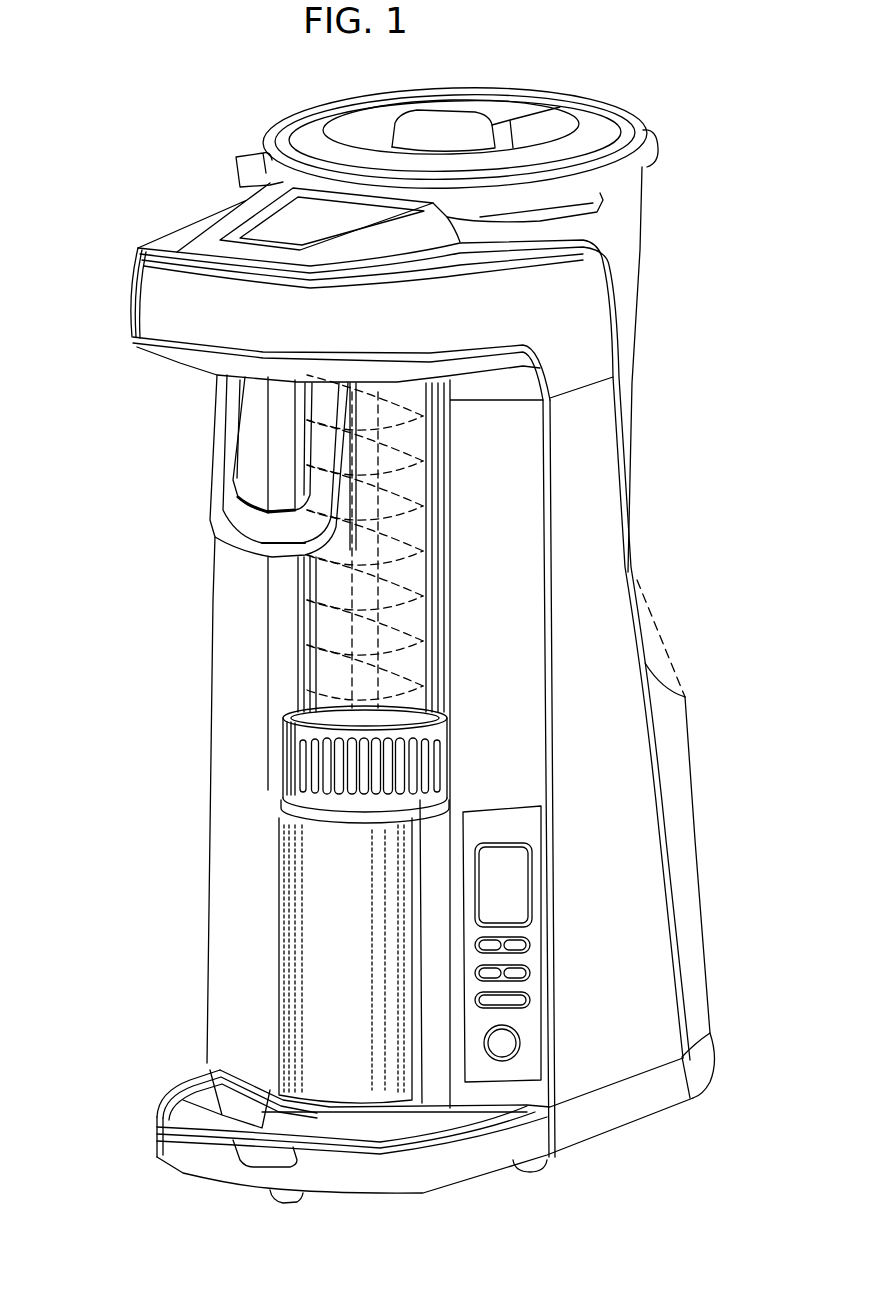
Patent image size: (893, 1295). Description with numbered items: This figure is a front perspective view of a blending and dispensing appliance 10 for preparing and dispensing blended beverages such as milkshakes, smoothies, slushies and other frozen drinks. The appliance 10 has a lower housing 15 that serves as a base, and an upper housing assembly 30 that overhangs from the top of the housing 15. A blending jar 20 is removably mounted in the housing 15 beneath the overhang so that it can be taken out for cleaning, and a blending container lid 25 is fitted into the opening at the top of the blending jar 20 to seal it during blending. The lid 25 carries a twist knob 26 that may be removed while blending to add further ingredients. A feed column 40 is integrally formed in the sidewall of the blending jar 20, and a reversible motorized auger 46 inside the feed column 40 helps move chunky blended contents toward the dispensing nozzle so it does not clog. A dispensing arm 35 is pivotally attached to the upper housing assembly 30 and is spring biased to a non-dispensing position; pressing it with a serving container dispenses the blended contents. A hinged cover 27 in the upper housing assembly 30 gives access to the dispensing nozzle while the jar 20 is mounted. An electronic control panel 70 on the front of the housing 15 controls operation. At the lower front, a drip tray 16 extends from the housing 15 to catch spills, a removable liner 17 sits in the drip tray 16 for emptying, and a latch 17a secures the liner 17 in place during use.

The blending and dispensing appliance 10 is at (262, 103).
The housing 15 is at (690, 747).
The drip tray 16 is at (415, 1183).
The removable liner 17 is at (205, 1105).
The latch 17a is at (233, 1160).
The blending jar 20 is at (645, 232).
The blending container lid 25 is at (640, 130).
The twist knob 26 is at (470, 112).
The hinged cover 27 is at (210, 248).
The upper housing assembly 30 is at (130, 293).
The dispensing arm 35 is at (210, 522).
The feed column 40 is at (297, 580).
The motorized auger 46 is at (297, 620).
The electronic control panel 70 is at (535, 1043).